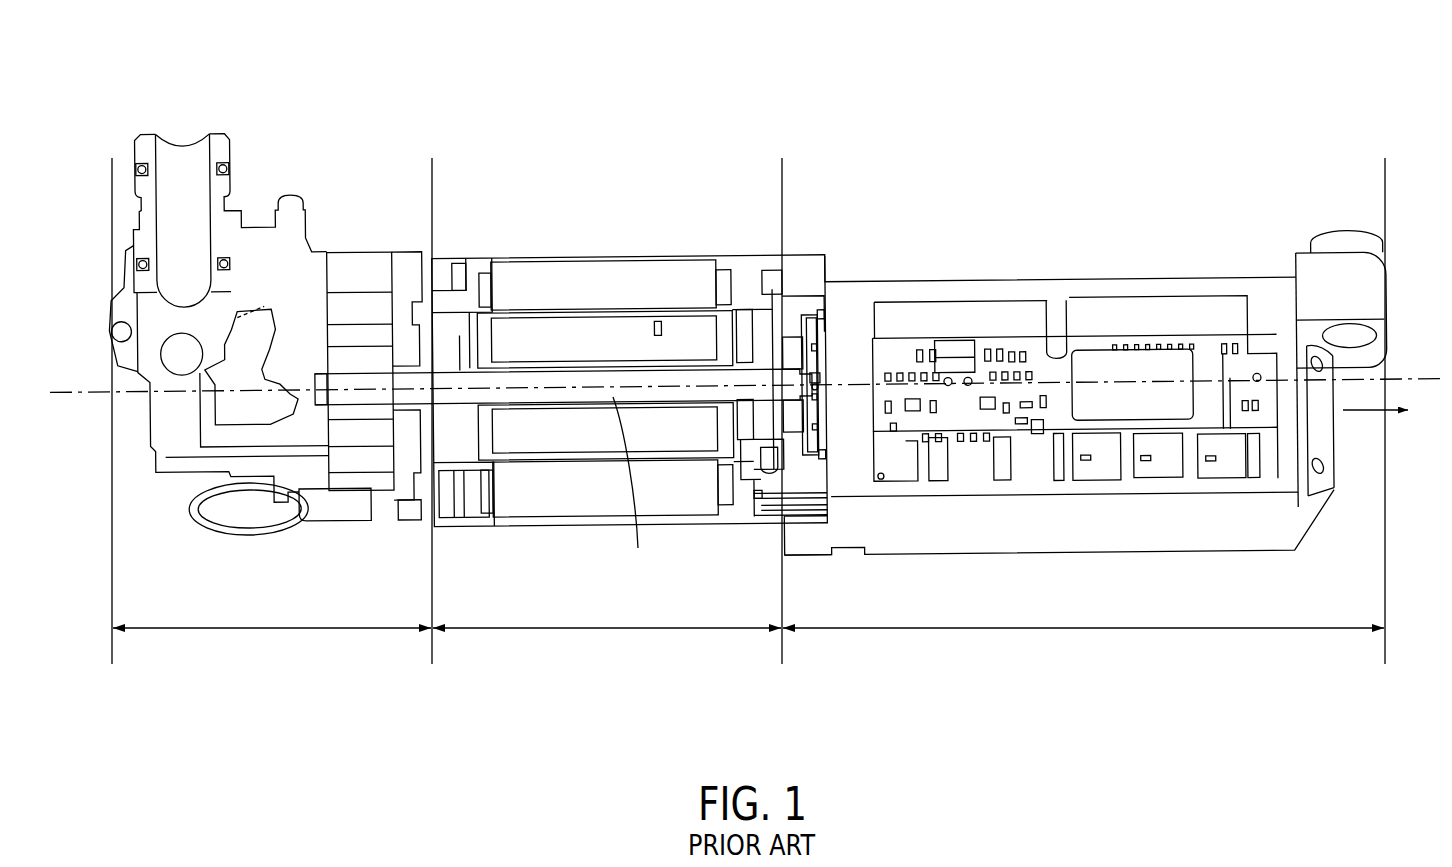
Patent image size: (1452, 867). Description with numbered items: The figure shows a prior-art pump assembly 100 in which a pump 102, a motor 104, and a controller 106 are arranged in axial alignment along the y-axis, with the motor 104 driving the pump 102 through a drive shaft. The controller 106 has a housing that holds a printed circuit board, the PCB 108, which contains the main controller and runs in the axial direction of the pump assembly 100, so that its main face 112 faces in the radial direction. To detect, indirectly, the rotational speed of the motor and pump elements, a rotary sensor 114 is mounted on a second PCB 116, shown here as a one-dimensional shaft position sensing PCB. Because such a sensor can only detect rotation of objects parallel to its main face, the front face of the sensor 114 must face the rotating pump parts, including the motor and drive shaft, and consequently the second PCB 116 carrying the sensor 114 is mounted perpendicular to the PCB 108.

The pump assembly 100 is at (102, 103).
The pump 102 is at (298, 177).
The motor 104 is at (613, 229).
The controller 106 is at (1178, 245).
The printed circuit board 108 is at (961, 338).
The main face 112 is at (956, 497).
The rotary sensor 114 is at (817, 374).
The second PCB 116 is at (822, 378).